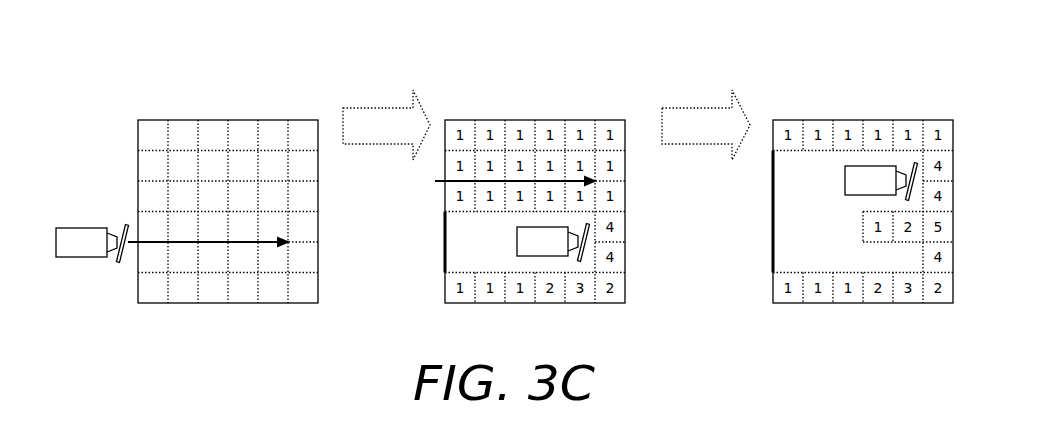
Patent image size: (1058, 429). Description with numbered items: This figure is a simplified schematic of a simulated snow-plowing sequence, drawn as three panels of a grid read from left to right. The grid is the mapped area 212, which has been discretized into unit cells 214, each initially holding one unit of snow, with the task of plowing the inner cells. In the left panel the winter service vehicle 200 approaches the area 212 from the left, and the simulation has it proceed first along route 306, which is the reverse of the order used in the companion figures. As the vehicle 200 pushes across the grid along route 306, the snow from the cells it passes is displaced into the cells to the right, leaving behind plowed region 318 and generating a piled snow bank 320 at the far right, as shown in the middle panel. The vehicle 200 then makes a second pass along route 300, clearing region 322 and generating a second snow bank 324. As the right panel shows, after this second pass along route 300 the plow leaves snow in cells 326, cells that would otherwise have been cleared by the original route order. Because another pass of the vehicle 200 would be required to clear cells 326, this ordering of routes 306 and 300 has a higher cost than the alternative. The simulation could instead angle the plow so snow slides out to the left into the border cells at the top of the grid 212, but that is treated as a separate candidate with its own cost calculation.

The winter service vehicle 200 is at (77, 252).
The mapped area 212 is at (138, 120).
The unit cells 214 is at (178, 123).
The route 300 is at (540, 178).
The route 306 is at (217, 246).
The region 318 is at (466, 242).
The snow bank 320 is at (612, 313).
The region 322 is at (803, 183).
The snow bank 324 is at (933, 100).
The cells 326 is at (843, 225).